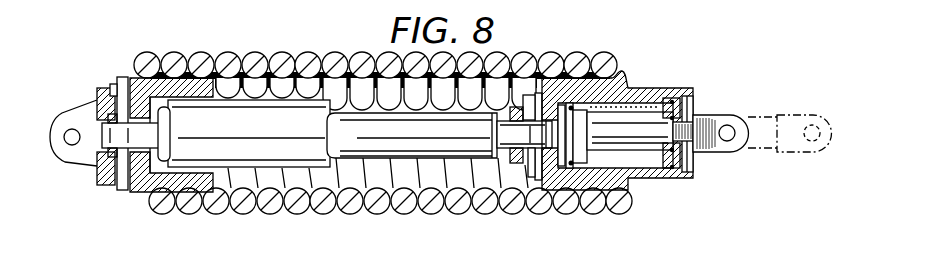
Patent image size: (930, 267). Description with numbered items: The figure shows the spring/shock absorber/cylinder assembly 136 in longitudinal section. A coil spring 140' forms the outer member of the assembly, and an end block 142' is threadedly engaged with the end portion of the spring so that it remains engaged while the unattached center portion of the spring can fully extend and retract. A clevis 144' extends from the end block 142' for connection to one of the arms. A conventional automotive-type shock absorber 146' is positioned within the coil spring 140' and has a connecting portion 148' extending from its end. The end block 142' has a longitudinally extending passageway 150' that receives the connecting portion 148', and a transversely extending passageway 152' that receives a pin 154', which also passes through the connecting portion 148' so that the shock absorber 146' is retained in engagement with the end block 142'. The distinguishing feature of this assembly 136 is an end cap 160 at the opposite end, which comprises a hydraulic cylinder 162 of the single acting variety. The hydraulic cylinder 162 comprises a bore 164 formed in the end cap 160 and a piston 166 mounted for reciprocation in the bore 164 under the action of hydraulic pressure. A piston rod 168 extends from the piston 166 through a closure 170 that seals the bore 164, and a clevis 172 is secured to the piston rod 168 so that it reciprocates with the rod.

The spring/shock absorber/cylinder assembly 136 is at (228, 44).
The coil spring 140' is at (380, 102).
The end block 142' is at (152, 159).
The clevis 144' is at (70, 121).
The shock absorber 146' is at (332, 172).
The connecting portion 148' is at (297, 148).
The longitudinally extending passageway 150' is at (295, 148).
The transversely extending passageway 152' is at (296, 116).
The pin 154' is at (329, 138).
The end cap 160 is at (645, 70).
The hydraulic cylinder 162 is at (626, 168).
The bore 164 is at (653, 178).
The piston 166 is at (583, 166).
The piston rod 168 is at (645, 125).
The closure 170 is at (695, 157).
The clevis 172 is at (735, 106).